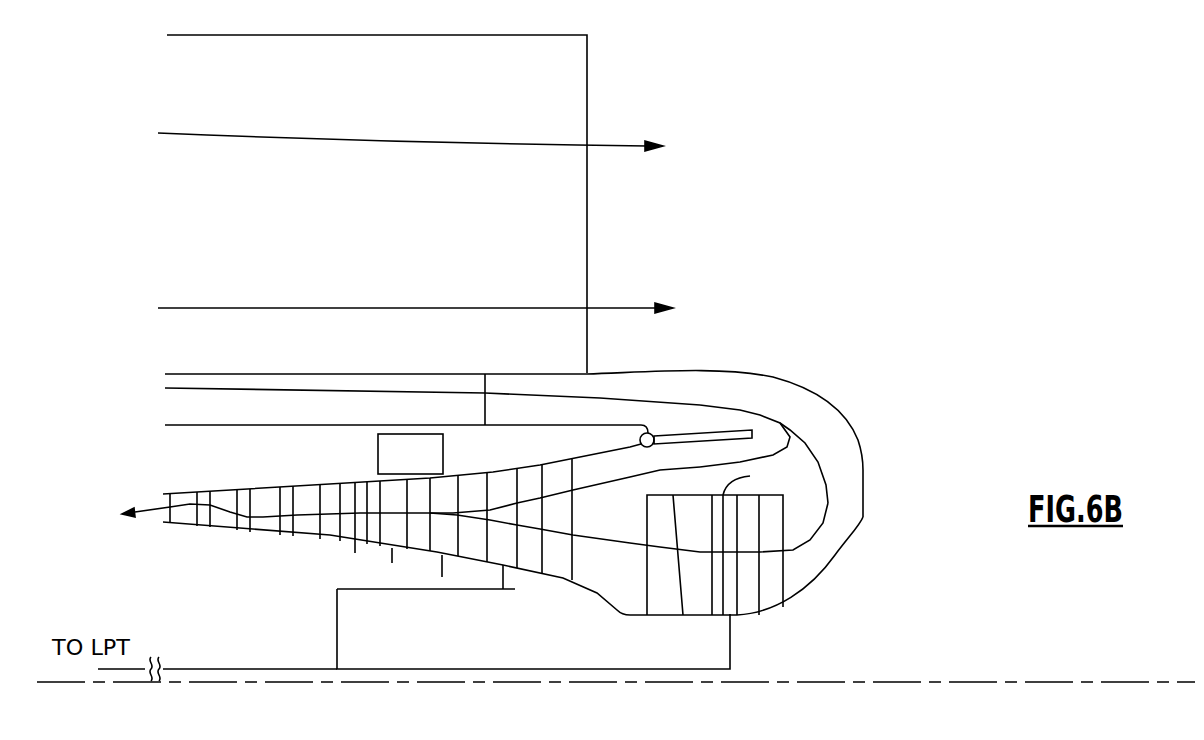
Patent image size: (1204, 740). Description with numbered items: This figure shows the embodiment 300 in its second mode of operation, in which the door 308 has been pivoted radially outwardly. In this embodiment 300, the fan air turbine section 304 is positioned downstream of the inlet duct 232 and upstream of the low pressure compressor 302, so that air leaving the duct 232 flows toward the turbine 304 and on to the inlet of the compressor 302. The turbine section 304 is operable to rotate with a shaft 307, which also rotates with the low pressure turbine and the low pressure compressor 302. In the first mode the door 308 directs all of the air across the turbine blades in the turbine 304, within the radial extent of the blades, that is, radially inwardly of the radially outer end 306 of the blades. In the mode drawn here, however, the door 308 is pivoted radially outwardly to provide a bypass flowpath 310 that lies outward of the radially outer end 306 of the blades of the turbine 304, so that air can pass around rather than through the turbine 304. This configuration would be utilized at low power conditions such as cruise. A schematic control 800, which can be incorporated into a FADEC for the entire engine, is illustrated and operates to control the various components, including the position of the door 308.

The embodiment 300 is at (886, 263).
The low pressure compressor 302 is at (353, 530).
The fan air turbine section 304 is at (740, 600).
The radially outer end of the blades 306 is at (750, 476).
The shaft 307 is at (445, 668).
The door 308 is at (692, 430).
The bypass flowpath 310 is at (747, 450).
The inlet duct 232 is at (800, 415).
The schematic control 800 is at (640, 441).